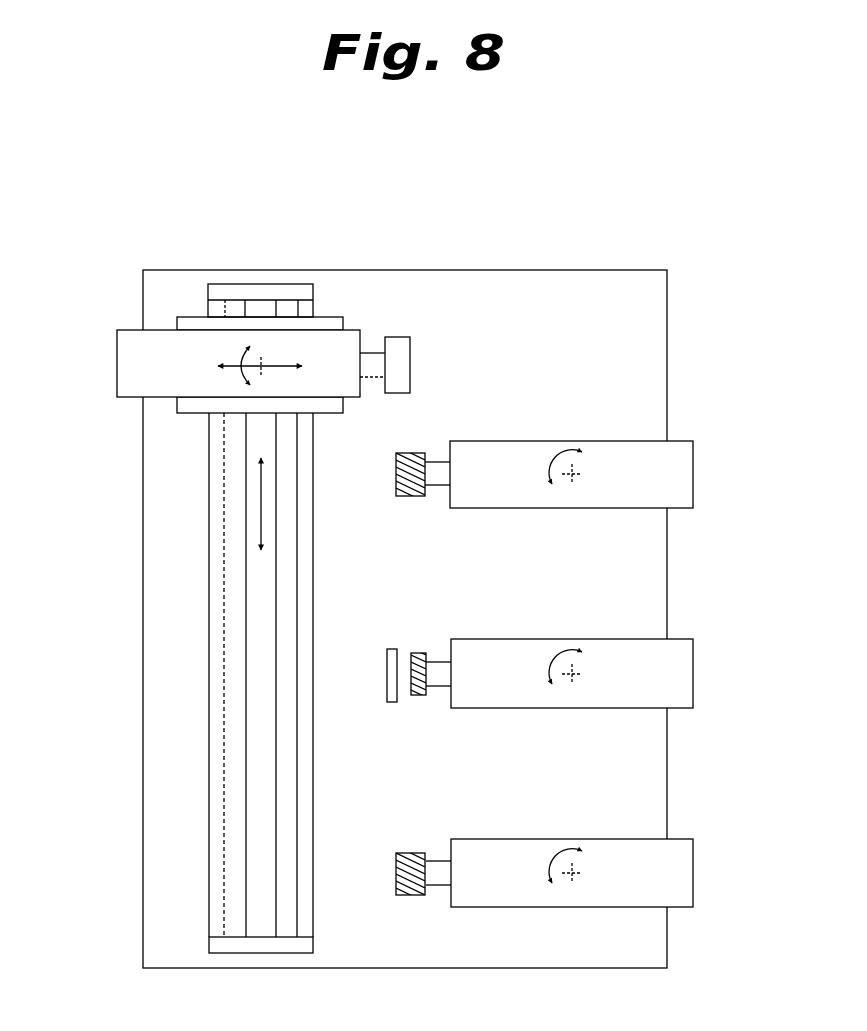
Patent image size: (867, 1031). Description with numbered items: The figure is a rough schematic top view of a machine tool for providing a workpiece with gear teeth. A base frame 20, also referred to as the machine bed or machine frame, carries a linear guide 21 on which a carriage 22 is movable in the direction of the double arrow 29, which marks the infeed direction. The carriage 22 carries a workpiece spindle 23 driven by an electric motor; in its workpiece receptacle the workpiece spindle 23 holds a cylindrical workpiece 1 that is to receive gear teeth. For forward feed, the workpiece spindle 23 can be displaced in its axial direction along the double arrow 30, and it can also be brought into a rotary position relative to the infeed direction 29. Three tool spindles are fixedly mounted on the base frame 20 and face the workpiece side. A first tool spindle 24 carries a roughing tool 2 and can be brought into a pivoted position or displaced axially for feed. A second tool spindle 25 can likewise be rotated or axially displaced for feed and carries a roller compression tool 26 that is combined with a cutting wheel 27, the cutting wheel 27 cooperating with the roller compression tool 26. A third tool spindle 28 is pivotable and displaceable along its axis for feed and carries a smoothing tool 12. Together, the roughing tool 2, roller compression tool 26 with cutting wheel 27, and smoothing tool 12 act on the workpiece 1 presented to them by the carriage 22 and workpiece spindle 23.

The cylindrical workpiece 1 is at (395, 348).
The roughing tool 2 is at (412, 463).
The smoothing tool 12 is at (412, 860).
The base frame 20 is at (577, 295).
The linear guide 21 is at (235, 553).
The carriage 22 is at (231, 325).
The workpiece spindle 23 is at (326, 345).
The first tool spindle 24 is at (625, 455).
The second tool spindle 25 is at (625, 655).
The roller compression tool 26 is at (419, 662).
The cutting wheel 27 is at (392, 650).
The third tool spindle 28 is at (625, 853).
The double arrow 29 is at (260, 503).
The double arrow 30 is at (278, 365).